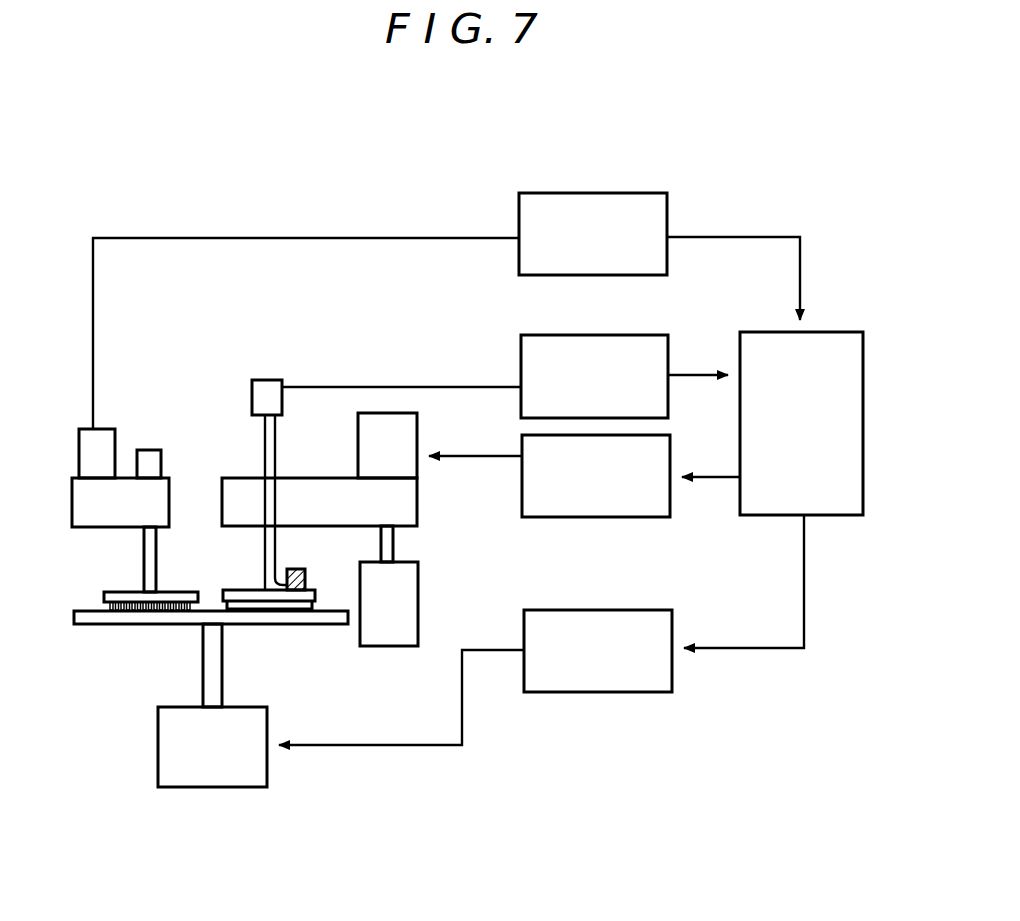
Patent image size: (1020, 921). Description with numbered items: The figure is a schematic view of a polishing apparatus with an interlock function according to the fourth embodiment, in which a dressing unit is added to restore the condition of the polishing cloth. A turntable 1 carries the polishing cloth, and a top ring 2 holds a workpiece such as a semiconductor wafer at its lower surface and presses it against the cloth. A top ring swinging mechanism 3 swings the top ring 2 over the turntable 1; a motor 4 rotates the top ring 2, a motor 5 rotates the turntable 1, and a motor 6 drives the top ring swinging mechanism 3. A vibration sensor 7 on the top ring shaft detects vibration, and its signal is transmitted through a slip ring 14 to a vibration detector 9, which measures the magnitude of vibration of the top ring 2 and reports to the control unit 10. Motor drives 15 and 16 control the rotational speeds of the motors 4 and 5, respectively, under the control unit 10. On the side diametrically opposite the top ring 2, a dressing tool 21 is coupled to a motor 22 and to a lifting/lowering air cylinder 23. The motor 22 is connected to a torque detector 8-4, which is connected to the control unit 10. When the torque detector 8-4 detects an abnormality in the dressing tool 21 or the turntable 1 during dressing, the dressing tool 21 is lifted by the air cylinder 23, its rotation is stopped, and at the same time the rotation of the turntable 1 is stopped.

The turntable 1 is at (135, 624).
The top ring 2 is at (232, 595).
The top ring swinging mechanism 3 is at (221, 477).
The motor 4 is at (417, 427).
The motor 5 is at (253, 707).
The motor 6 is at (418, 583).
The vibration sensor 7 is at (298, 569).
The torque detector 8-4 is at (563, 193).
The vibration detector 9 is at (568, 335).
The control unit 10 is at (828, 332).
The slip ring 14 is at (268, 380).
The motor drive 15 is at (600, 517).
The motor drive 16 is at (590, 692).
The dressing tool 21 is at (118, 592).
The motor 22 is at (85, 450).
The lifting/lowering air cylinder 23 is at (150, 452).